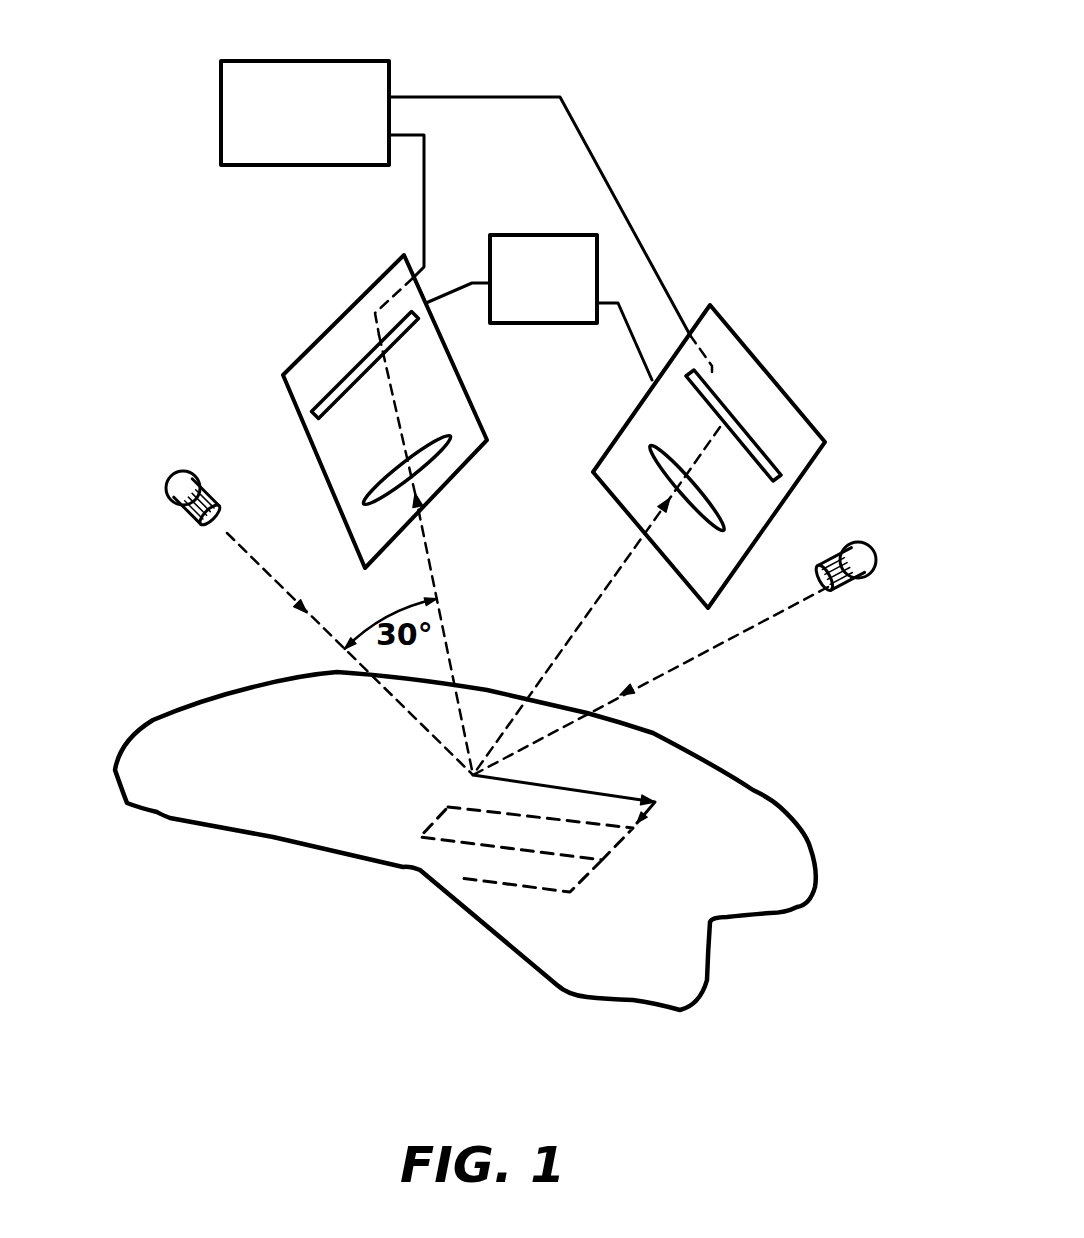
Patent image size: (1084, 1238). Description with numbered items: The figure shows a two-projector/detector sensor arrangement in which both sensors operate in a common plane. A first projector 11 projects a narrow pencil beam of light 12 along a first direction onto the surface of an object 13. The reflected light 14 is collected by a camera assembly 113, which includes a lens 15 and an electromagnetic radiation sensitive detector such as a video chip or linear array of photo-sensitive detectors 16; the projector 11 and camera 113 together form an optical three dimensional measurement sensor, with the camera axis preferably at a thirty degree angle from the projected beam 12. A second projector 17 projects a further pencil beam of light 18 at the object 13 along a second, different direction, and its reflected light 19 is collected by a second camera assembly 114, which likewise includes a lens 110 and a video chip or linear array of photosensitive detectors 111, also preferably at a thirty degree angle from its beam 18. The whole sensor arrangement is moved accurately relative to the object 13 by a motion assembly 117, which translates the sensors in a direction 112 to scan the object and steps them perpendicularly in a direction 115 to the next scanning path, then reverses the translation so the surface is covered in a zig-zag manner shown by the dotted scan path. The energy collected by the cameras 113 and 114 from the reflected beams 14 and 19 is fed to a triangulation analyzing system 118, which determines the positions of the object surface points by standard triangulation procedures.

The first projector 11 is at (170, 490).
The light beam 12 is at (260, 570).
The object 13 is at (337, 840).
The reflected light 14 is at (427, 553).
The lens 15 is at (388, 478).
The linear array of photo-sensitive detectors 16 is at (327, 393).
The second projector 17 is at (873, 555).
The light beam 18 is at (713, 647).
The reflected light 19 is at (580, 635).
The lens 110 is at (698, 488).
The linear array of photosensitive detectors 111 is at (767, 450).
The scanning direction 112 is at (570, 787).
The camera assembly 113 is at (348, 312).
The camera assembly 114 is at (763, 373).
The stepping direction 115 is at (653, 812).
The motion assembly 117 is at (540, 243).
The triangulation analyzing system 118 is at (305, 67).